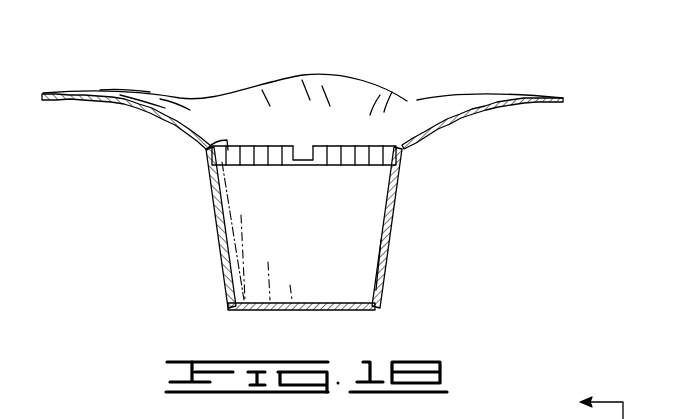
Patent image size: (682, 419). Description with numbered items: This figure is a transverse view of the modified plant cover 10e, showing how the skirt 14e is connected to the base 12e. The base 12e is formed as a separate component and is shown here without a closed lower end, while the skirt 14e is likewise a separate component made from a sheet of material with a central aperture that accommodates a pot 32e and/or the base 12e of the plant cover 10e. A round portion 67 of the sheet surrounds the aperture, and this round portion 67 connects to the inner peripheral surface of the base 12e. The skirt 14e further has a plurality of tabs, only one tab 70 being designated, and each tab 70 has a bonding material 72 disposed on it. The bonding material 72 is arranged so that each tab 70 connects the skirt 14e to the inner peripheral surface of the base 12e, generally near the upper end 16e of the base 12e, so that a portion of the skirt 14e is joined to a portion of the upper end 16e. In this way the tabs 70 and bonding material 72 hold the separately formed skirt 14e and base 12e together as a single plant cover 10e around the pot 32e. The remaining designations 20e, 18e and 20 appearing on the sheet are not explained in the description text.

The modified plant cover 10e is at (355, 49).
The skirt 14e is at (416, 102).
The upper end 16e is at (205, 148).
The round portion 67 is at (227, 140).
The tab 70 is at (300, 150).
The bonding material 72 is at (395, 158).
The base 12e is at (217, 247).
The pot 32e is at (395, 210).
The side wall lower portion 20e is at (385, 248).
The bottom wall 18e is at (372, 309).
The section arrow 20 is at (581, 406).